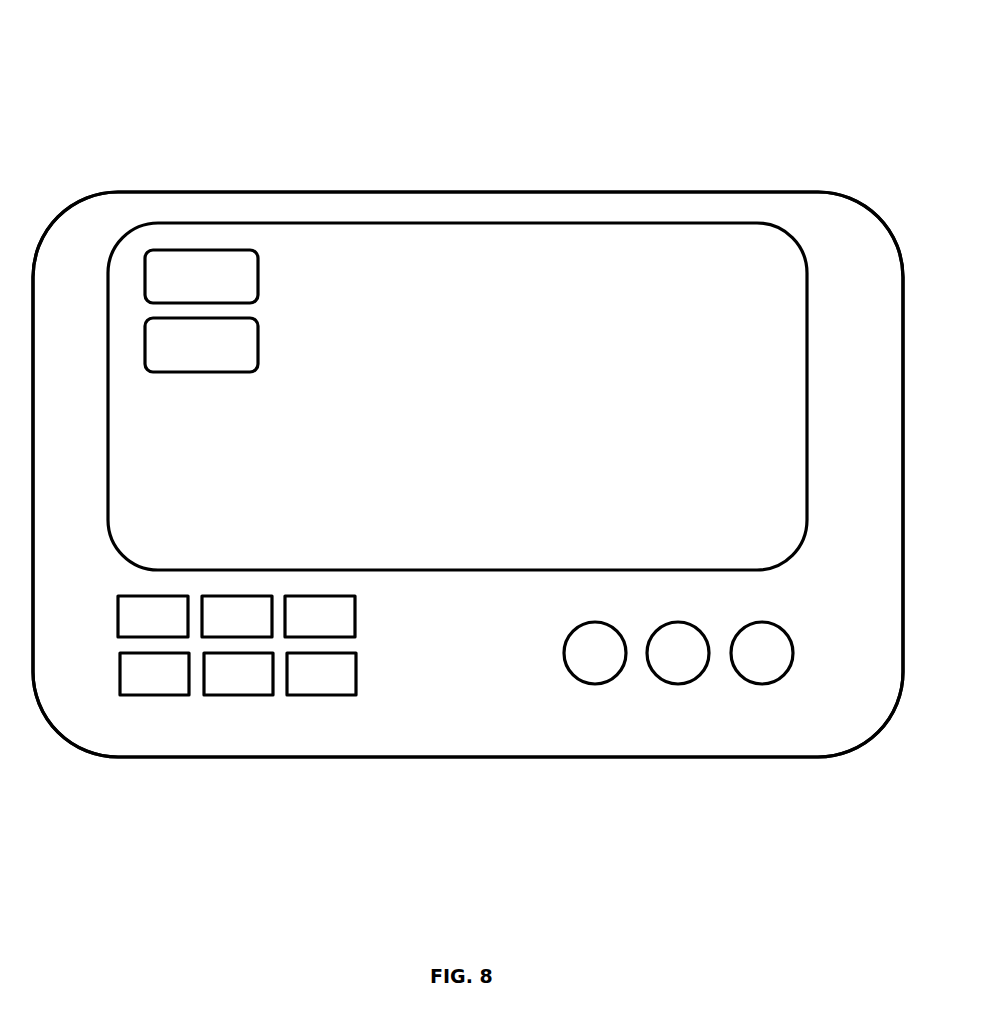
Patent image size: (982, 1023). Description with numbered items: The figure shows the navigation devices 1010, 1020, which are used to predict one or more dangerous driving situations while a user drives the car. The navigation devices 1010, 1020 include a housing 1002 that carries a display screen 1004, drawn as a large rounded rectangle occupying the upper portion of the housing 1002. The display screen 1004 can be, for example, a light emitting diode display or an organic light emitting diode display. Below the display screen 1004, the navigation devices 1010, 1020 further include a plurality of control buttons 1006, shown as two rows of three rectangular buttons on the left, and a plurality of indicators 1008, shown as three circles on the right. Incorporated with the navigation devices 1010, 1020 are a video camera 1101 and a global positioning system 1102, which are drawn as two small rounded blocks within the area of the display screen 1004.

The navigation device 1010 is at (468, 389).
The navigation device 1020 is at (650, 105).
The housing 1002 is at (818, 192).
The display screen 1004 is at (808, 418).
The control buttons 1006 is at (243, 713).
The indicators 1008 is at (680, 705).
The video camera 1101 is at (259, 281).
The global positioning system 1102 is at (259, 348).